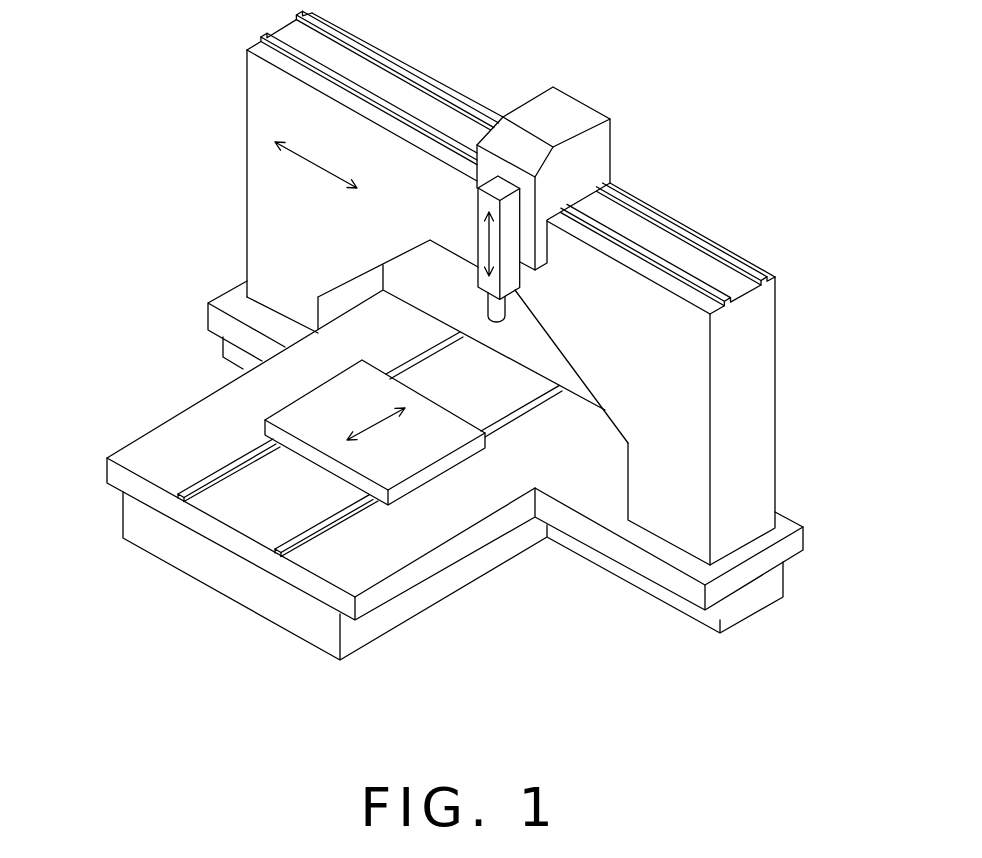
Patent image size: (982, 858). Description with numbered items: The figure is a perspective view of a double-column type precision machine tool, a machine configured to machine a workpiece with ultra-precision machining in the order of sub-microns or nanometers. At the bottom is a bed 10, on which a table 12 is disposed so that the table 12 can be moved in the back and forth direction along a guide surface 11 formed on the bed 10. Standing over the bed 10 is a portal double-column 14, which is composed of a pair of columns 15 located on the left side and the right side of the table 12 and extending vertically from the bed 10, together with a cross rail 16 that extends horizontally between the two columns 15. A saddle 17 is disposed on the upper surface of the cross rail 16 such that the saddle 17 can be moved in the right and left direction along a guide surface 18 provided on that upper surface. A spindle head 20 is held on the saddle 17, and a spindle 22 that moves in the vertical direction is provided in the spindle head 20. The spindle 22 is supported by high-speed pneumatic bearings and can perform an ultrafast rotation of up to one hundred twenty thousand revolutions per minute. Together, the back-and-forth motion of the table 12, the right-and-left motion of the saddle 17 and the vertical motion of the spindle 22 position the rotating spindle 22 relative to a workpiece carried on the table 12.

The bed 10 is at (140, 455).
The guide surface 11 is at (237, 467).
The table 12 is at (417, 450).
The portal double-column 14 is at (770, 228).
The column 15 is at (272, 217).
The cross rail 16 is at (317, 118).
The saddle 17 is at (565, 107).
The guide surface 18 is at (655, 222).
The spindle head 20 is at (513, 282).
The spindle 22 is at (498, 313).